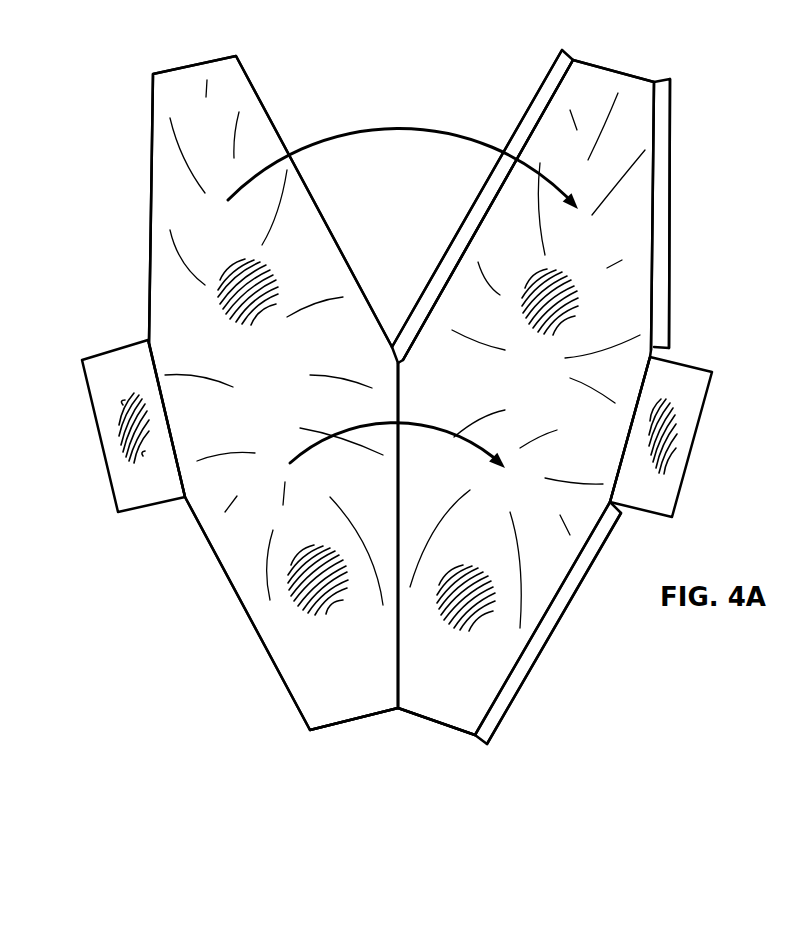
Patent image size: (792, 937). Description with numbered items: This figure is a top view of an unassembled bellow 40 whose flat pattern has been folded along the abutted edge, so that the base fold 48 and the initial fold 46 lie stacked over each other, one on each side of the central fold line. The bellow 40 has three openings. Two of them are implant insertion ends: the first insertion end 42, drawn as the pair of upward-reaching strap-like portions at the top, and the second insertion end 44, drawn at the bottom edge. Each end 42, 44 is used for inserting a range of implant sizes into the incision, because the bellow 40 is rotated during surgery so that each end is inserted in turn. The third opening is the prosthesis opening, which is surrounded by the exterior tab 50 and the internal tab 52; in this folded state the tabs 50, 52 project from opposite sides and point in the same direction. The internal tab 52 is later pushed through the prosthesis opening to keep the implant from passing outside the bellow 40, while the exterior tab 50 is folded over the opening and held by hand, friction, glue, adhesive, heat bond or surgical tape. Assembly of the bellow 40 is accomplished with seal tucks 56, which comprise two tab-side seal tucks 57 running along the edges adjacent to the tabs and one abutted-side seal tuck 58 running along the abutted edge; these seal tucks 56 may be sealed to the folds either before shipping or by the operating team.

The bellow 40 is at (80, 133).
The first insertion end 42 is at (190, 56).
The second insertion end 44 is at (350, 732).
The initial fold 46 is at (278, 377).
The base fold 48 is at (545, 379).
The exterior tab 50 is at (675, 474).
The internal tab 52 is at (113, 465).
The seal tucks 56 is at (668, 178).
The tab-side seal tucks 57 is at (666, 119).
The abutted-side seal tuck 58 is at (530, 110).